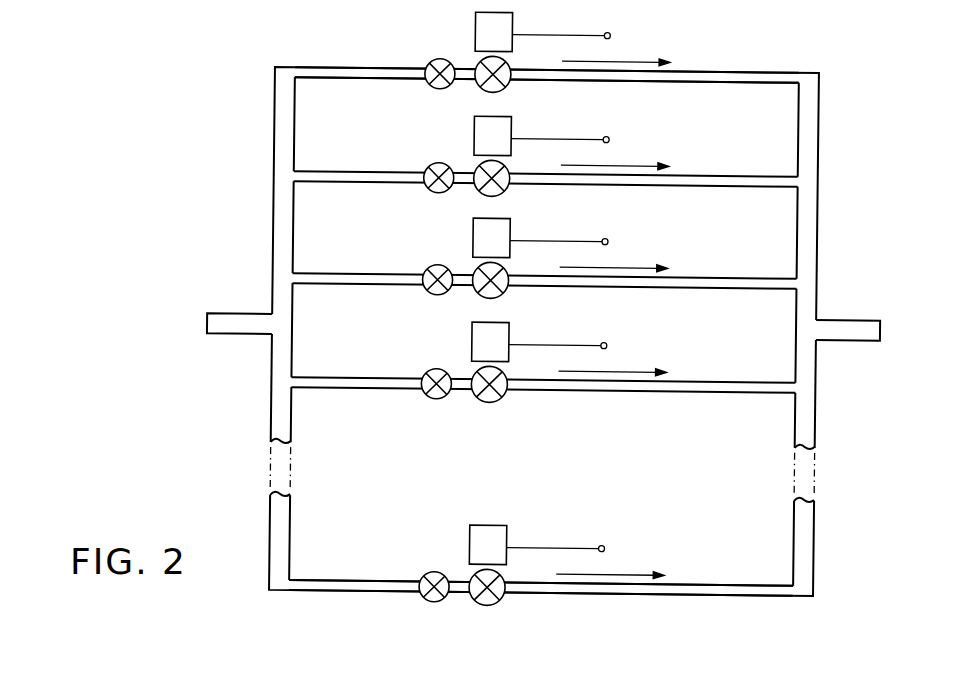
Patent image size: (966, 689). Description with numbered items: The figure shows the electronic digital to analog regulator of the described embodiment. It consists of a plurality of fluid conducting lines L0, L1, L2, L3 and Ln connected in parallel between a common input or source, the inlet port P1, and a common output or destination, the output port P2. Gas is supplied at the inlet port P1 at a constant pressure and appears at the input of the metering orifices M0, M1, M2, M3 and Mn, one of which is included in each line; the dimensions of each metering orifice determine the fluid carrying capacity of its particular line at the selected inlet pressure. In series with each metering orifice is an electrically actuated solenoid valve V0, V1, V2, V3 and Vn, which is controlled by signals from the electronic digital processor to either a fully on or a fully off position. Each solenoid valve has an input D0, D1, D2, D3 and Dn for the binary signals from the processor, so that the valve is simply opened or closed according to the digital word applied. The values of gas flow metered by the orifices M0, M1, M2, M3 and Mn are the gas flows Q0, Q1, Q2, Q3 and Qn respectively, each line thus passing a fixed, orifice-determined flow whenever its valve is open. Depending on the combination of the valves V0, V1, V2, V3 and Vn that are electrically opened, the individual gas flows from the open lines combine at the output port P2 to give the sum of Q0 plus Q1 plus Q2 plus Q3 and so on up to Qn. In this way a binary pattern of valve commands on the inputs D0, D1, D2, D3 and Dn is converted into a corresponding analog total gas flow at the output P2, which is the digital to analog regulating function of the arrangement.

The fluid conducting line L0 is at (362, 68).
The fluid conducting line L1 is at (360, 173).
The fluid conducting line L2 is at (360, 275).
The fluid conducting line L3 is at (360, 379).
The fluid conducting line Ln is at (360, 582).
The metering orifice M0 is at (440, 62).
The metering orifice M1 is at (439, 167).
The metering orifice M2 is at (437, 269).
The metering orifice M3 is at (436, 373).
The metering orifice Mn is at (434, 576).
The solenoid valve V0 is at (494, 52).
The solenoid valve V1 is at (493, 156).
The solenoid valve V2 is at (491, 258).
The solenoid valve V3 is at (490, 362).
The solenoid valve Vn is at (488, 565).
The binary signal input D0 is at (576, 35).
The binary signal input D1 is at (575, 139).
The binary signal input D2 is at (574, 241).
The binary signal input D3 is at (573, 345).
The binary signal input Dn is at (570, 548).
The gas flow Q0 is at (629, 62).
The gas flow Q1 is at (628, 166).
The gas flow Q2 is at (627, 268).
The gas flow Q3 is at (625, 372).
The gas flow Qn is at (623, 575).
The inlet port P1 is at (207, 310).
The output port P2 is at (884, 317).